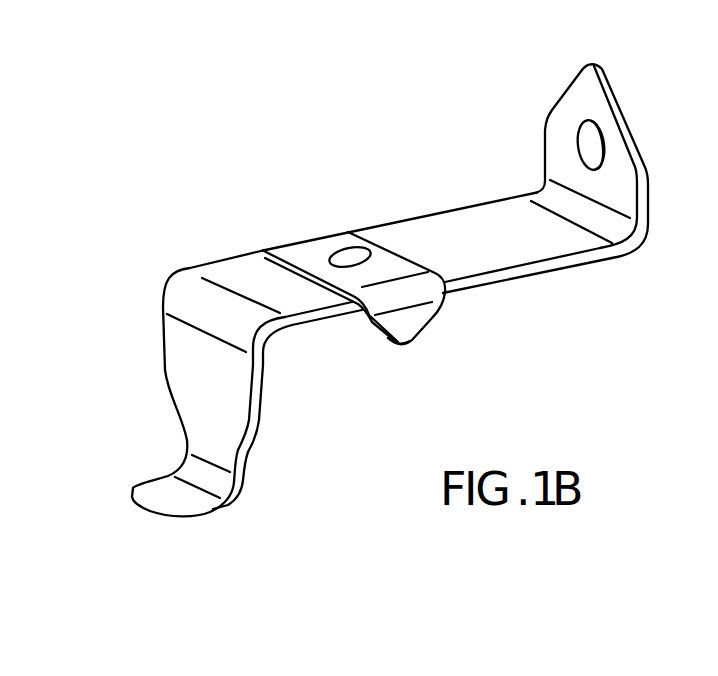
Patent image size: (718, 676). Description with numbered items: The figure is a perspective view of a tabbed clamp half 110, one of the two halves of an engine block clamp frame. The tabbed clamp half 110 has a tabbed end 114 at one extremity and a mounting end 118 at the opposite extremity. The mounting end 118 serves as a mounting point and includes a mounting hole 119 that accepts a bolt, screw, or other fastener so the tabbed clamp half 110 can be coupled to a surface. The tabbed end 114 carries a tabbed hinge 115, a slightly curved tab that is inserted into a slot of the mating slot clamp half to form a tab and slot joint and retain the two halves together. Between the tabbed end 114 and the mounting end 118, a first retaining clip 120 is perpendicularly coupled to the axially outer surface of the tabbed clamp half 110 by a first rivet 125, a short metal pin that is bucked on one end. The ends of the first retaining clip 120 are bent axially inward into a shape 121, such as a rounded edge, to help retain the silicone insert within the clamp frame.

The tabbed clamp half 110 is at (115, 186).
The tabbed end 114 is at (190, 392).
The tabbed hinge 115 is at (220, 488).
The mounting end 118 is at (556, 132).
The mounting hole 119 is at (598, 146).
The first retaining clip 120 is at (299, 244).
The shape 121 is at (449, 326).
The first rivet 125 is at (351, 257).